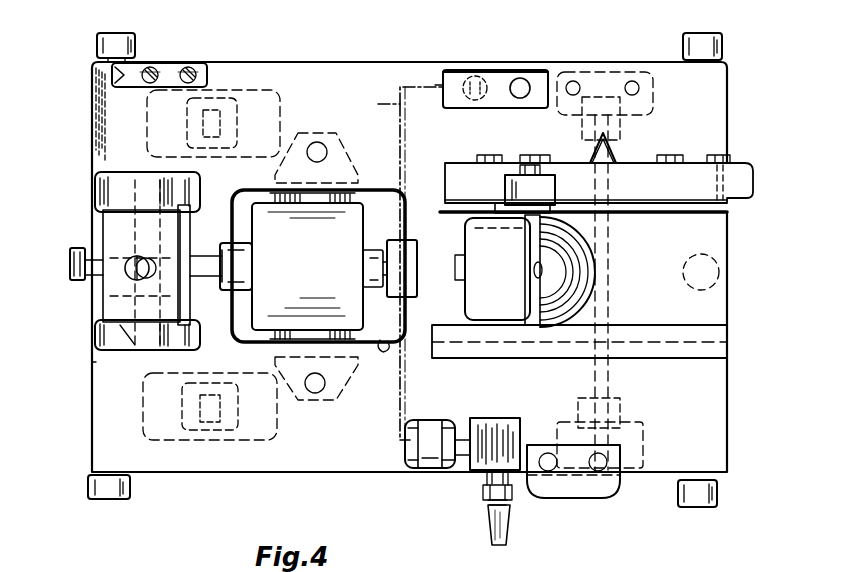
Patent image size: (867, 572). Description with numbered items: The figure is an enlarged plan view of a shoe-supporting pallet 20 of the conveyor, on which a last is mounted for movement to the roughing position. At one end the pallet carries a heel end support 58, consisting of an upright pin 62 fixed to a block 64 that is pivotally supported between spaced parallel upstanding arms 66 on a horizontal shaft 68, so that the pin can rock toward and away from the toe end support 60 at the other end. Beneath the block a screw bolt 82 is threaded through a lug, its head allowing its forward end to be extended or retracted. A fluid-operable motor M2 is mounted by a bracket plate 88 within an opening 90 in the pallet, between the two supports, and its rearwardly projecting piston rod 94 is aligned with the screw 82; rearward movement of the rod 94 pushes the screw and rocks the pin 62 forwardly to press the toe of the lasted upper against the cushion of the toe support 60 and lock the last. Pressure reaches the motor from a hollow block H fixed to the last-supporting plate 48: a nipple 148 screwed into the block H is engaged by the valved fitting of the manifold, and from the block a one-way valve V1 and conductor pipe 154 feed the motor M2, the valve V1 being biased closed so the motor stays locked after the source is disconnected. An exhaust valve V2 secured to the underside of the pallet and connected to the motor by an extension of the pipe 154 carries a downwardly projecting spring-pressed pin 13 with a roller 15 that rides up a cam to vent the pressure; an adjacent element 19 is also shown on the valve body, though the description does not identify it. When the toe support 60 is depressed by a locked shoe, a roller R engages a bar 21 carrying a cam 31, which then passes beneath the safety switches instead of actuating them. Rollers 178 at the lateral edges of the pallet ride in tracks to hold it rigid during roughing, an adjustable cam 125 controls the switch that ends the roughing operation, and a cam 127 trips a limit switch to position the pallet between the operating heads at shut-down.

The pallet 20 is at (274, 500).
The rollers 178 is at (722, 42).
The adjustable cam 125 is at (168, 72).
The heel end support 58 is at (123, 258).
The arms 66 is at (100, 197).
The block 64 is at (115, 222).
The screw bolt 82 is at (70, 262).
The pin 62 is at (128, 272).
The piston rod 94 is at (203, 252).
The shaft 68 is at (92, 364).
The motor M2 is at (318, 266).
The bracket plate 88 is at (268, 340).
The opening 90 is at (388, 350).
The conductor pipe 154 is at (378, 104).
The spring-pressed pin 13 is at (491, 76).
The roller 15 is at (474, 80).
The indicator lamp 19 is at (520, 100).
The exhaust valve V2 is at (510, 72).
The last-supporting plate 48 is at (372, 66).
The cam 31 is at (624, 158).
The bar 21 is at (740, 192).
The roller R is at (555, 188).
The toe end support 60 is at (609, 257).
The one-way valve V1 is at (428, 428).
The block H is at (500, 422).
The nipple 148 is at (488, 528).
The cam 127 is at (585, 490).